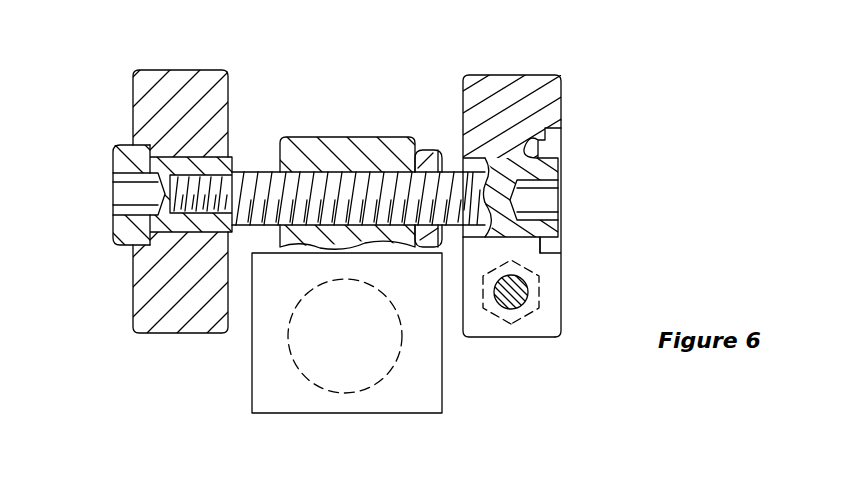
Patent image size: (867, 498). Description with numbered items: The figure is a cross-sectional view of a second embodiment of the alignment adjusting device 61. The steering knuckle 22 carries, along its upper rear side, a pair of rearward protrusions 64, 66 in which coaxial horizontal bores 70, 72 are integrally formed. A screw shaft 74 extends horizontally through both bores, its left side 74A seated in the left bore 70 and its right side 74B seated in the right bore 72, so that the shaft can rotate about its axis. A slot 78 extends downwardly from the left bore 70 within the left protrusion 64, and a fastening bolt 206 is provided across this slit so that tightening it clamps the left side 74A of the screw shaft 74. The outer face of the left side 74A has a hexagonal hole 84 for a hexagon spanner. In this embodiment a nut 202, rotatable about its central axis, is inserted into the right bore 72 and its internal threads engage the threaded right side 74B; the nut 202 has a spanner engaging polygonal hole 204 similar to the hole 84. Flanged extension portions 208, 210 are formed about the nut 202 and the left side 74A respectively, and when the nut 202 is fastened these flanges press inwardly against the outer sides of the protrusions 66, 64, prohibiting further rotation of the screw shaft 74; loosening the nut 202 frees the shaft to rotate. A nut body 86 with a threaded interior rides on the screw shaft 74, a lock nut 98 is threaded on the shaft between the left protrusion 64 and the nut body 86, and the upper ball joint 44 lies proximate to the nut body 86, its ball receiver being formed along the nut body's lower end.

The steering knuckle 22 is at (165, 66).
The right protrusion 66 is at (143, 100).
The right bore 72 is at (116, 163).
The spanner engaging polygonal hole 204 is at (123, 188).
The nut 202 is at (104, 242).
The flanged extension portion 208 is at (157, 235).
The right side of the screw shaft 74B is at (200, 235).
The screw shaft 74 is at (247, 166).
The nut body 86 is at (335, 145).
The lock nut 98 is at (437, 152).
The left protrusion 64 is at (522, 82).
The alignment adjusting device 61 is at (658, 124).
The flanged extension portion 210 is at (562, 120).
The left bore 70 is at (560, 167).
The hexagonal hole 84 is at (553, 200).
The left side of the screw shaft 74A is at (518, 238).
The slot 78 is at (552, 305).
The fastening bolt 206 is at (498, 308).
The upper ball joint 44 is at (296, 402).